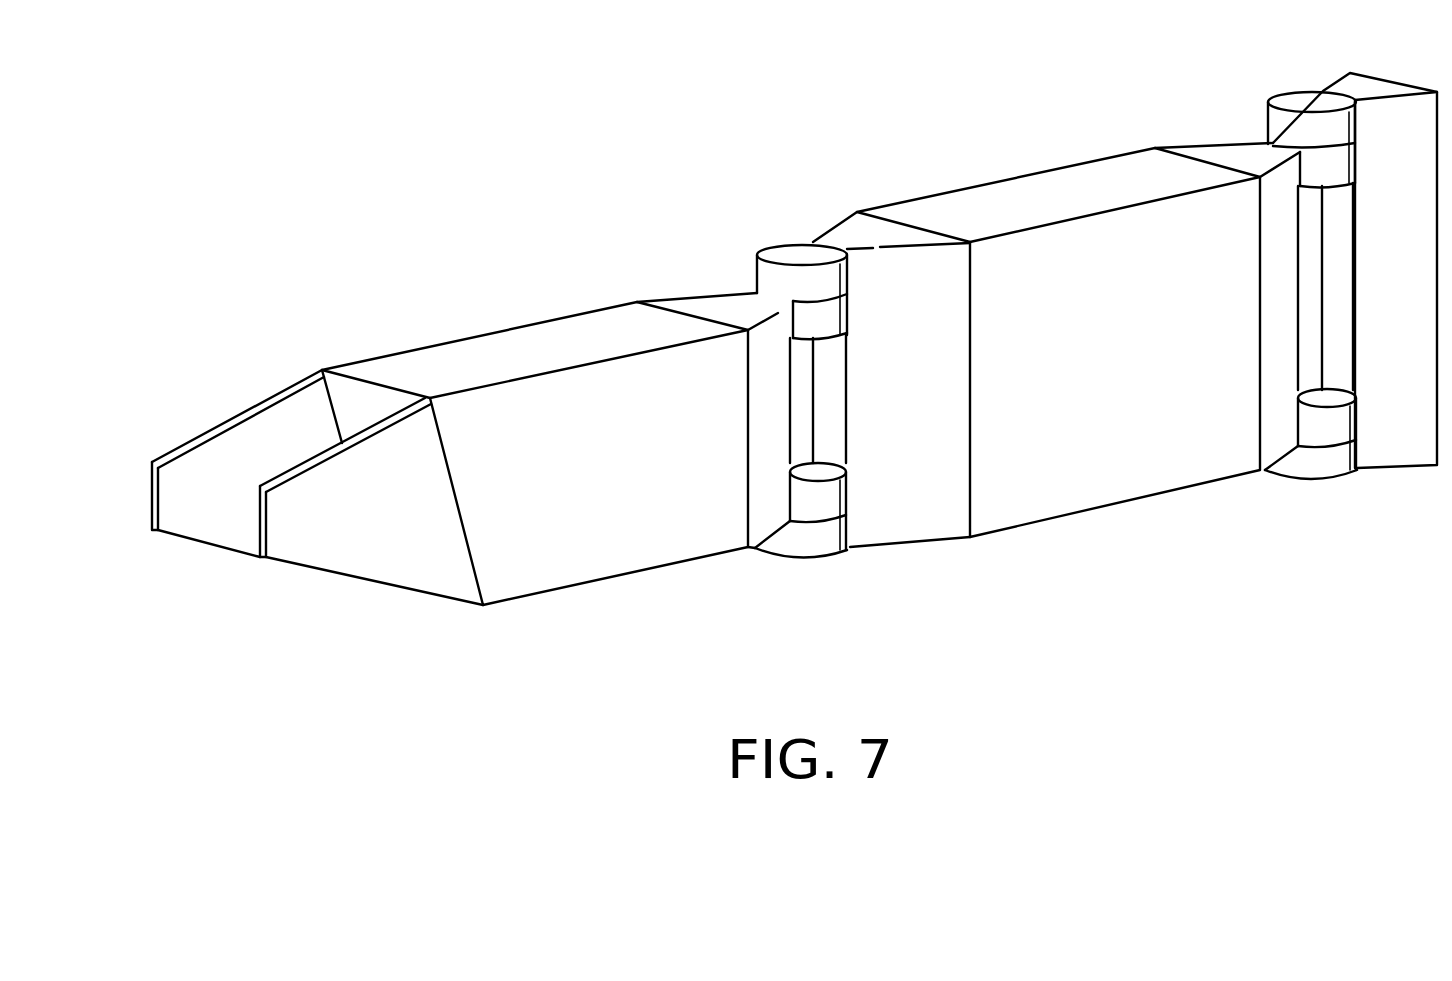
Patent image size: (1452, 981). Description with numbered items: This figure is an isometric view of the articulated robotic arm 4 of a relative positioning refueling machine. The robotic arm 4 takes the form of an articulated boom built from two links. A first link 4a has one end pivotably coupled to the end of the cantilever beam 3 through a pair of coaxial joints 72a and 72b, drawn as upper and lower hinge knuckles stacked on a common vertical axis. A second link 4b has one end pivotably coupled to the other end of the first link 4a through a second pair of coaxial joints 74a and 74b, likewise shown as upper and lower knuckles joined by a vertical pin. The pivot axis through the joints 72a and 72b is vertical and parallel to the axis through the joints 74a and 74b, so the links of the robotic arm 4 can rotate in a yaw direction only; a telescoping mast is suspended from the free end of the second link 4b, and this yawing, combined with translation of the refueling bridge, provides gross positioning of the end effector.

The cantilever beam 3 is at (1405, 453).
The articulated robotic arm 4 is at (1056, 106).
The first link 4a is at (1032, 493).
The second link 4b is at (572, 555).
The coaxial joint 72a is at (1306, 82).
The coaxial joint 72b is at (1311, 497).
The upper door hinge knuckle 74a is at (790, 236).
The lower door hinge knuckle 74b is at (810, 575).